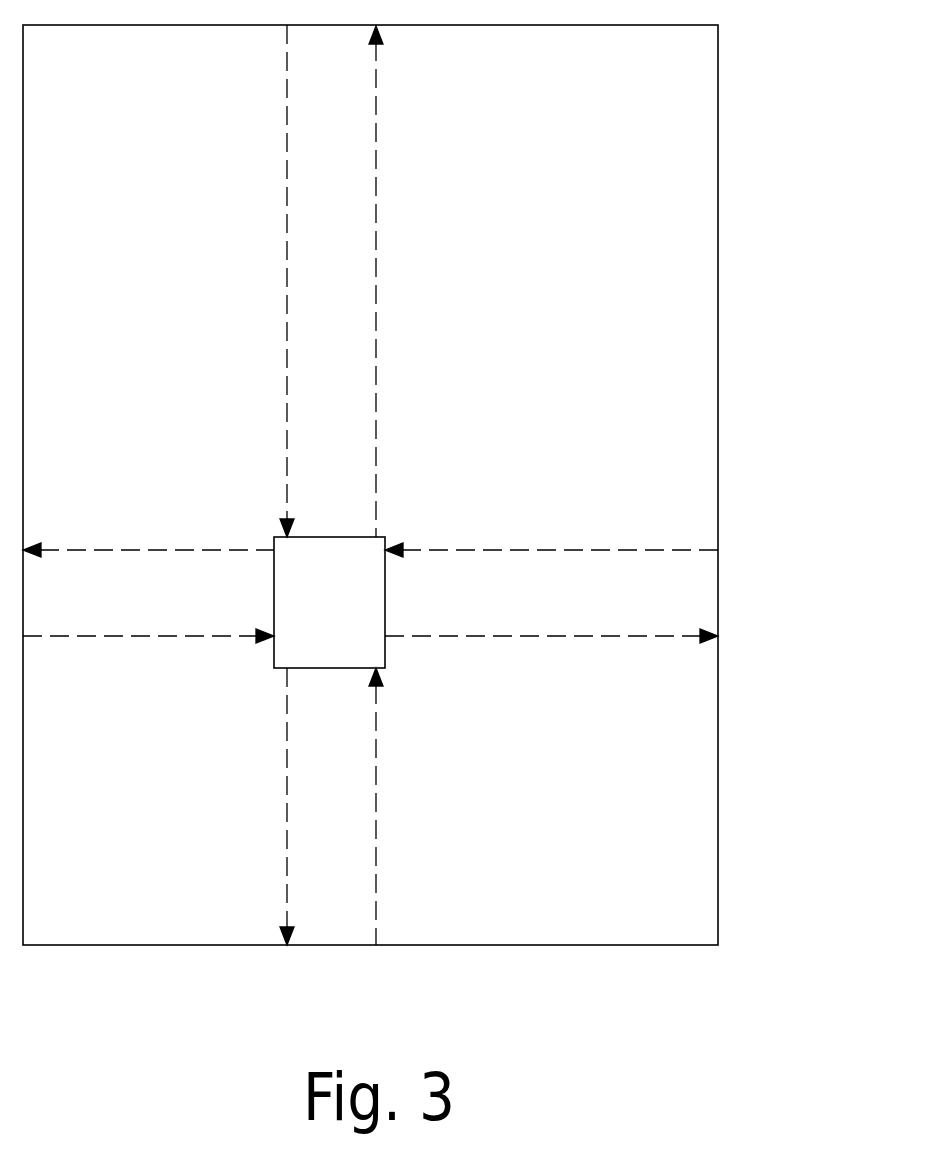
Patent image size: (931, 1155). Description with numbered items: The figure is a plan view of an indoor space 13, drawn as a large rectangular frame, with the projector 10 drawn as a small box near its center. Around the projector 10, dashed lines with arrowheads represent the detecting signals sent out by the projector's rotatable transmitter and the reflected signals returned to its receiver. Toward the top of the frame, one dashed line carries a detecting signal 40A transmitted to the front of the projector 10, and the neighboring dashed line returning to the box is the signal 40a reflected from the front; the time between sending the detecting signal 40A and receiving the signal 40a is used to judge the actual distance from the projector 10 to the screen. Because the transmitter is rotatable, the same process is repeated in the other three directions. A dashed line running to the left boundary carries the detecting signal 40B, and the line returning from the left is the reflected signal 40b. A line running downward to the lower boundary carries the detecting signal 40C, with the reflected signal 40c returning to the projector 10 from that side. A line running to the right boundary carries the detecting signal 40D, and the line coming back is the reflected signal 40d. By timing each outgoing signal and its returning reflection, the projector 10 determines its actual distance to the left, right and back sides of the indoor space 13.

The indoor space 13 is at (718, 228).
The projector 10 is at (347, 551).
The reflected signal 40a is at (287, 240).
The detecting signal 40A is at (377, 277).
The detecting signal 40B is at (74, 548).
The reflected signal 40b is at (45, 636).
The detecting signal 40C is at (287, 905).
The reflected signal 40c is at (376, 853).
The reflected signal 40d is at (513, 550).
The detecting signal 40D is at (497, 636).